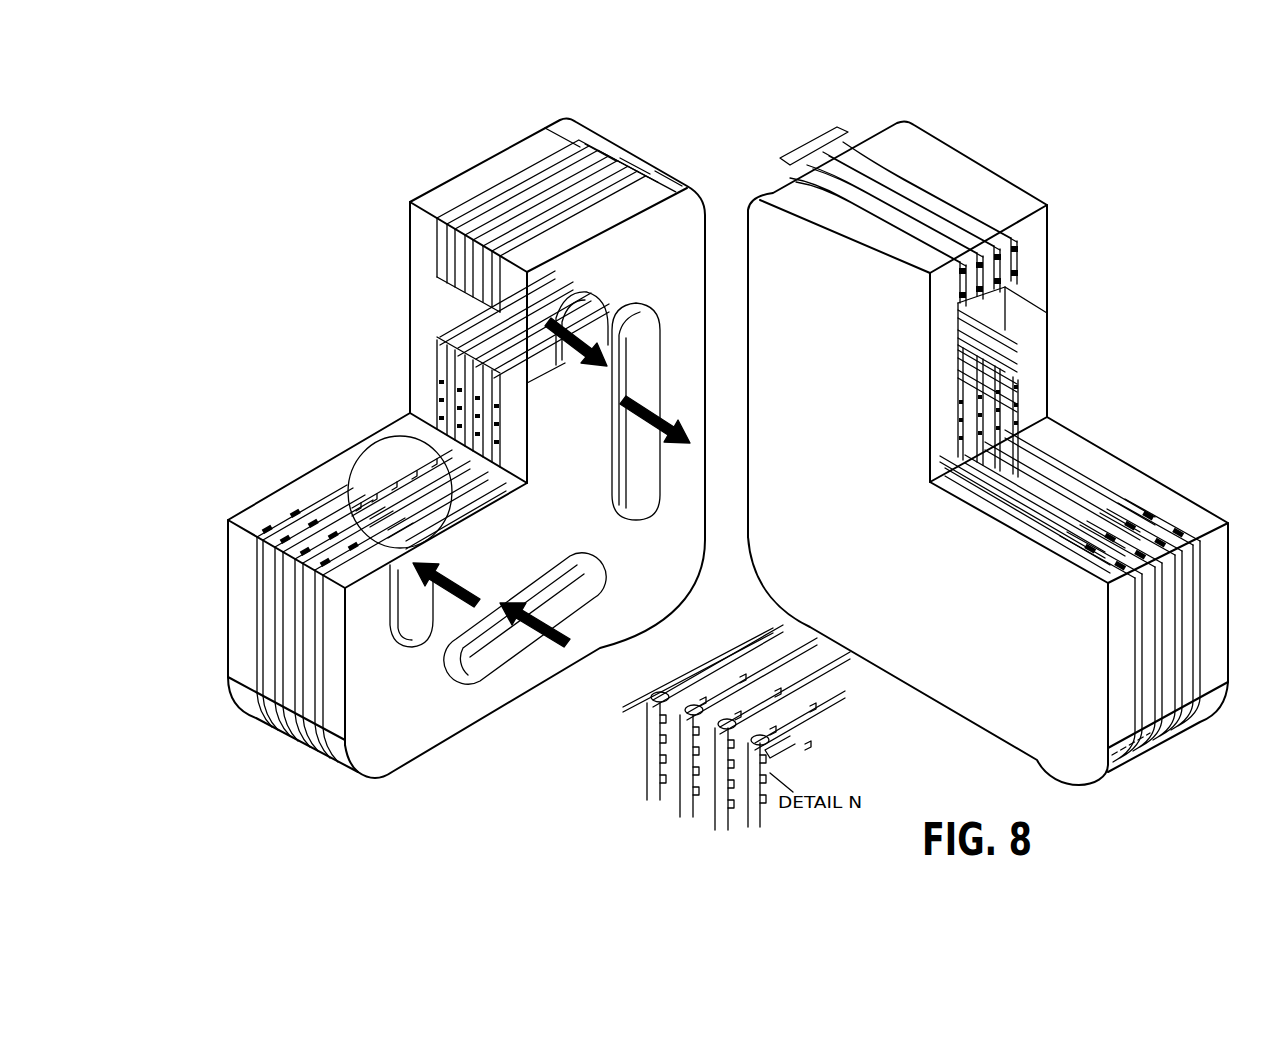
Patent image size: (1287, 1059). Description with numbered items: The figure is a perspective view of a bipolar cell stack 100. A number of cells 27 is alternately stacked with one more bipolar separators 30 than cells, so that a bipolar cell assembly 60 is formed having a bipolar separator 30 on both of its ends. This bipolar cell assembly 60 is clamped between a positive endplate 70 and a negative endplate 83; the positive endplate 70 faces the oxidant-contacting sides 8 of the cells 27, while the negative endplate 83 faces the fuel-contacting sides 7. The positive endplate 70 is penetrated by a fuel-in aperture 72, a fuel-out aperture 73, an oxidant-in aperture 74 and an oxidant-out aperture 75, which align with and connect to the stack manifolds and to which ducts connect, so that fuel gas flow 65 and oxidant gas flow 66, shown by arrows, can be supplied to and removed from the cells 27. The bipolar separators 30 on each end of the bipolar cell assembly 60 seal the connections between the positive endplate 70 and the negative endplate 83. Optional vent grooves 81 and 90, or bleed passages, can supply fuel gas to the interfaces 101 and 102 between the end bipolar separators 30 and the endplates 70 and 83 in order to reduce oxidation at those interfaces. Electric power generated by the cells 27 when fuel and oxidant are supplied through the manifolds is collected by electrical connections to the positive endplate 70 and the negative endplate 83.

The bipolar cell stack 100 is at (385, 124).
The positive endplate 70 is at (340, 732).
The negative endplate 83 is at (247, 698).
The bipolar cell assembly 60 is at (806, 143).
The bipolar separator 30 is at (1017, 223).
The cell 27 is at (1000, 270).
The oxidant-out aperture 75 is at (462, 305).
The fuel-in aperture 72 is at (335, 482).
The vent groove 90 is at (372, 505).
The vent groove 81 is at (418, 478).
The oxidant gas flow 66 is at (592, 363).
The fuel gas flow 65 is at (681, 446).
The fuel-out aperture 73 is at (645, 382).
The oxidant-in aperture 74 is at (590, 590).
The fuel-contacting side 7 is at (958, 422).
The oxidant-contacting side 8 is at (1015, 378).
The interface 101 is at (1057, 457).
The interface 102 is at (967, 478).